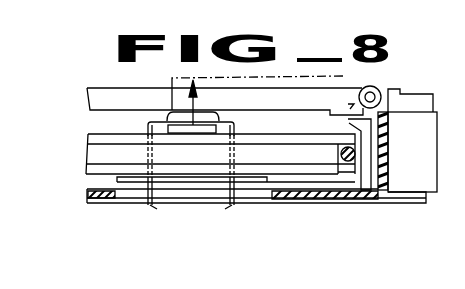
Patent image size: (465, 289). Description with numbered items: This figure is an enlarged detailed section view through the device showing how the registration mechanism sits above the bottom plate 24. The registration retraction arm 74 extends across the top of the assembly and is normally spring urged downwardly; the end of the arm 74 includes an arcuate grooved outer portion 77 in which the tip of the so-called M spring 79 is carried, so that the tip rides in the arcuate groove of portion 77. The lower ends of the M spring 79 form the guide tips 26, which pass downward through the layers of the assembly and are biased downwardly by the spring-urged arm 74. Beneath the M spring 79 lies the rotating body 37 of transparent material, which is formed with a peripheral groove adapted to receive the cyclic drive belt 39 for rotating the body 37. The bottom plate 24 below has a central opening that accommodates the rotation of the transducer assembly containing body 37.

The registration retraction arm 74 is at (323, 97).
The arcuate grooved outer portion 77 is at (185, 116).
The M spring 79 is at (147, 124).
The rotating body 37 is at (86, 141).
The guide tips 26 is at (147, 205).
The bottom plate 24 is at (329, 201).
The cyclic drive belt 39 is at (342, 165).